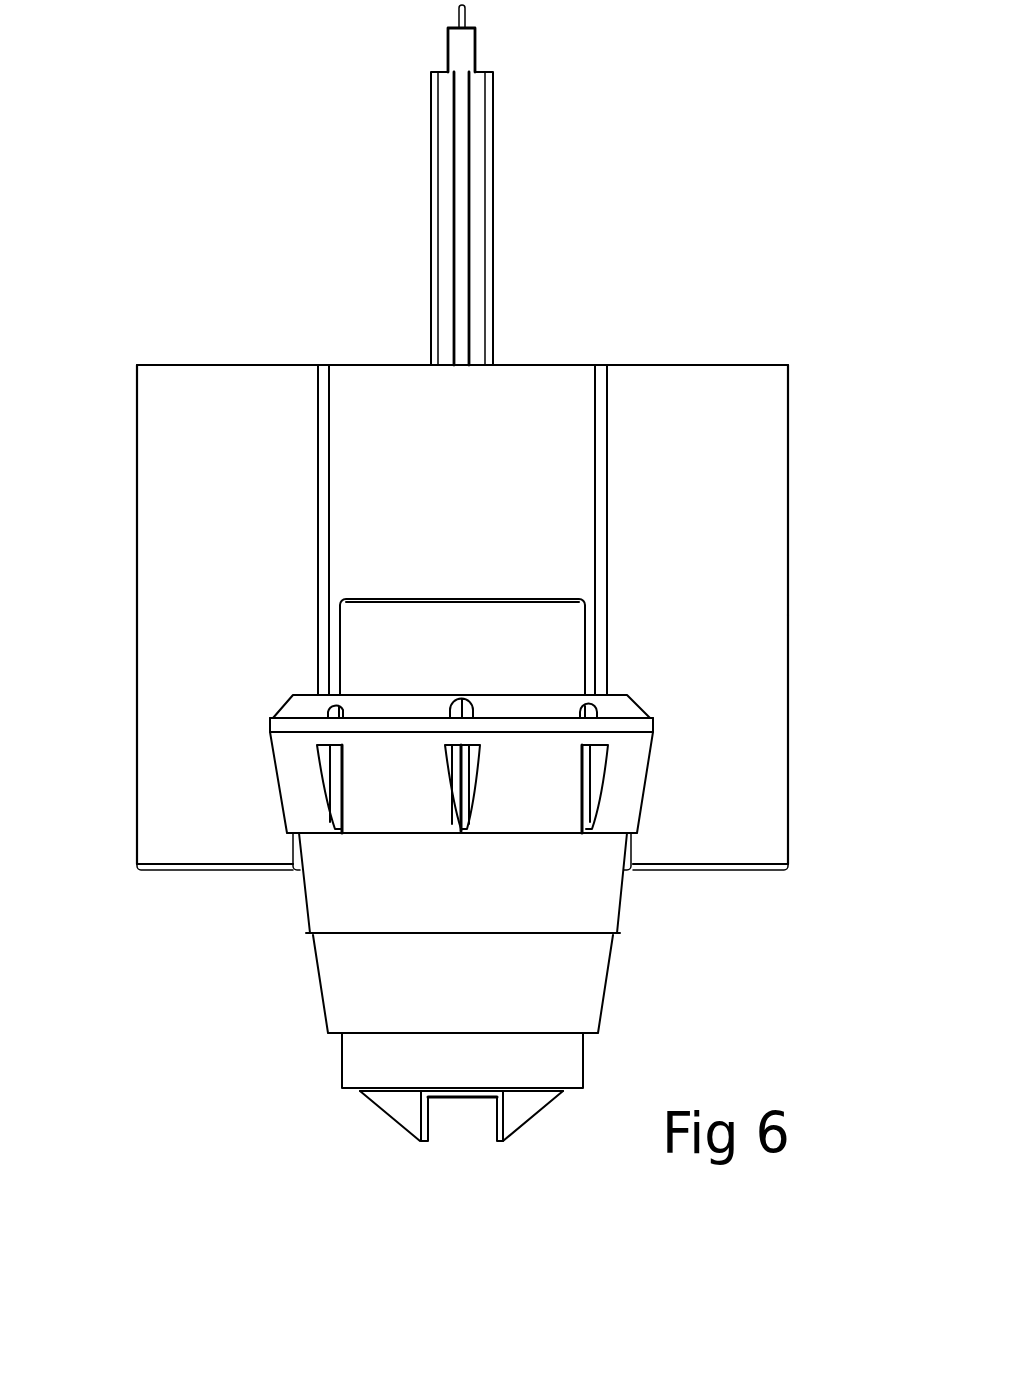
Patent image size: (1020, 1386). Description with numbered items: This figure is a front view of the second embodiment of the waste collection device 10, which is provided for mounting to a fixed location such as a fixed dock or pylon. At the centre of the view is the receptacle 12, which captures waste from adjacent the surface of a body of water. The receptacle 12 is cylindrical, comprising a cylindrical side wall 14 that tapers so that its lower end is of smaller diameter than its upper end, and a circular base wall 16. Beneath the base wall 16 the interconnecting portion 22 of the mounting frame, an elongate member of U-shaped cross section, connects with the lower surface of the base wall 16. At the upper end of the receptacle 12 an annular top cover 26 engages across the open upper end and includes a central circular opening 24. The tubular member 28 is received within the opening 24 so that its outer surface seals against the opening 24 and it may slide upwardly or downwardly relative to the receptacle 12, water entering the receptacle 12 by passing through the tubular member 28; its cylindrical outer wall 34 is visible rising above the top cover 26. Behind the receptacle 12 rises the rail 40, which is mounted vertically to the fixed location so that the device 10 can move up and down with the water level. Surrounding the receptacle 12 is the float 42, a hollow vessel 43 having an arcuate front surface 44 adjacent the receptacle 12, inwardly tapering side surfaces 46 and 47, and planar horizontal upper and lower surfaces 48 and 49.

The waste collection device 10 is at (722, 184).
The receptacle 12 is at (590, 953).
The cylindrical side wall 14 is at (580, 1008).
The circular base wall 16 is at (577, 1095).
The interconnecting portion 22 is at (497, 1147).
The opening 24 is at (588, 690).
The top cover 26 is at (308, 693).
The tubular member 28 is at (490, 623).
The cylindrical outer wall 34 is at (412, 627).
The rail 40 is at (493, 210).
The float 42 is at (758, 405).
The vessel 43 is at (748, 500).
The arcuate front surface 44 is at (453, 453).
The inwardly tapering side surface 46 is at (763, 695).
The inwardly tapering side surface 47 is at (160, 563).
The upper surface 48 is at (182, 358).
The lower surface 49 is at (220, 873).